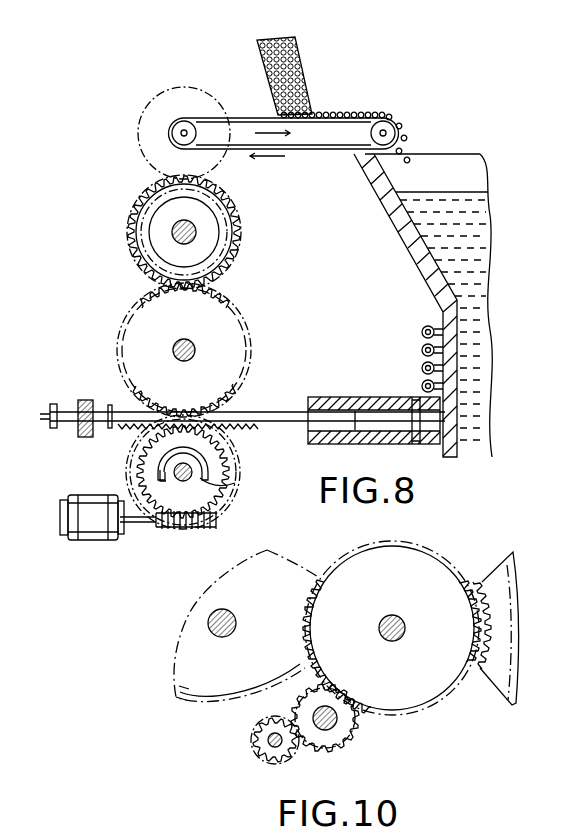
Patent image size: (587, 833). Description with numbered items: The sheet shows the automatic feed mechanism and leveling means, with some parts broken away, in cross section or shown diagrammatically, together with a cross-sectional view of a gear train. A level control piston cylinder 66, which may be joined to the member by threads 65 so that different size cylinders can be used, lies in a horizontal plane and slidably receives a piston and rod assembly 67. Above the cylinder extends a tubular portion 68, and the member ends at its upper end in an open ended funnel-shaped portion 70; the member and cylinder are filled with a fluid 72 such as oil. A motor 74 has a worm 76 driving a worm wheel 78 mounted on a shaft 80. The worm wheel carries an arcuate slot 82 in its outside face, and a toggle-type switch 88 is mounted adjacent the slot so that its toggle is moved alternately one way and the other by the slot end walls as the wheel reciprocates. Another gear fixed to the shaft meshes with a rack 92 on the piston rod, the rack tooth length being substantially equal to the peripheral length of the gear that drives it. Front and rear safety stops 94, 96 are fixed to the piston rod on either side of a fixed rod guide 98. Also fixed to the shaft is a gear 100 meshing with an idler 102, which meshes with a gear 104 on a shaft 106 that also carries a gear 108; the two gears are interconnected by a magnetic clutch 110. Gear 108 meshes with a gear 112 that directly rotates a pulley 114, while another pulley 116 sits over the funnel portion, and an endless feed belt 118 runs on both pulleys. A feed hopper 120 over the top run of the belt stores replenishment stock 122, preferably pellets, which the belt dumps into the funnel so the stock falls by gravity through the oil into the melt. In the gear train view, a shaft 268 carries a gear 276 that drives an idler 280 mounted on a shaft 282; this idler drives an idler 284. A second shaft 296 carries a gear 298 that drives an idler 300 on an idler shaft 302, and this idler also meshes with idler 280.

In FIG. 8, the threads 65 is at (416, 398).
In FIG. 8, the level control piston cylinder 66 is at (366, 397).
In FIG. 8, the piston and rod assembly 67 is at (276, 410).
In FIG. 8, the tubular portion 68 is at (422, 340).
In FIG. 8, the funnel-shaped portion 70 is at (366, 176).
In FIG. 8, the fluid 72 is at (444, 305).
In FIG. 8, the motor 74 is at (84, 495).
In FIG. 8, the worm 76 is at (208, 530).
In FIG. 8, the worm wheel 78 is at (205, 450).
In FIG. 8, the shaft 80 is at (235, 483).
In FIG. 8, the arcuate slot 82 is at (208, 472).
In FIG. 8, the toggle-type switch 88 is at (160, 466).
In FIG. 8, the rack 92 is at (246, 418).
In FIG. 8, the front safety stop 94 is at (109, 405).
In FIG. 8, the rear safety stop 96 is at (54, 404).
In FIG. 8, the fixed rod guide 98 is at (84, 400).
In FIG. 8, the gear 100 is at (136, 446).
In FIG. 8, the idler 102 is at (150, 302).
In FIG. 8, the gear 104 is at (160, 273).
In FIG. 8, the shaft 106 is at (176, 233).
In FIG. 8, the gear 108 is at (165, 197).
In FIG. 8, the magnetic clutch 110 is at (218, 246).
In FIG. 8, the gear 112 is at (148, 173).
In FIG. 8, the pulley 114 is at (183, 133).
In FIG. 8, the pulley 116 is at (383, 133).
In FIG. 8, the endless feed belt 118 is at (250, 119).
In FIG. 8, the feed hopper 120 is at (268, 57).
In FIG. 8, the replenishment stock 122 is at (317, 112).
In FIG. 10, the shaft 268 is at (222, 637).
In FIG. 10, the gear 276 is at (196, 690).
In FIG. 10, the idler 280 is at (325, 578).
In FIG. 10, the shaft 282 is at (392, 613).
In FIG. 10, the idler 284 is at (490, 585).
In FIG. 10, the shaft 296 is at (290, 752).
In FIG. 10, the gear 298 is at (262, 745).
In FIG. 10, the idler 300 is at (348, 712).
In FIG. 10, the idler shaft 302 is at (336, 728).